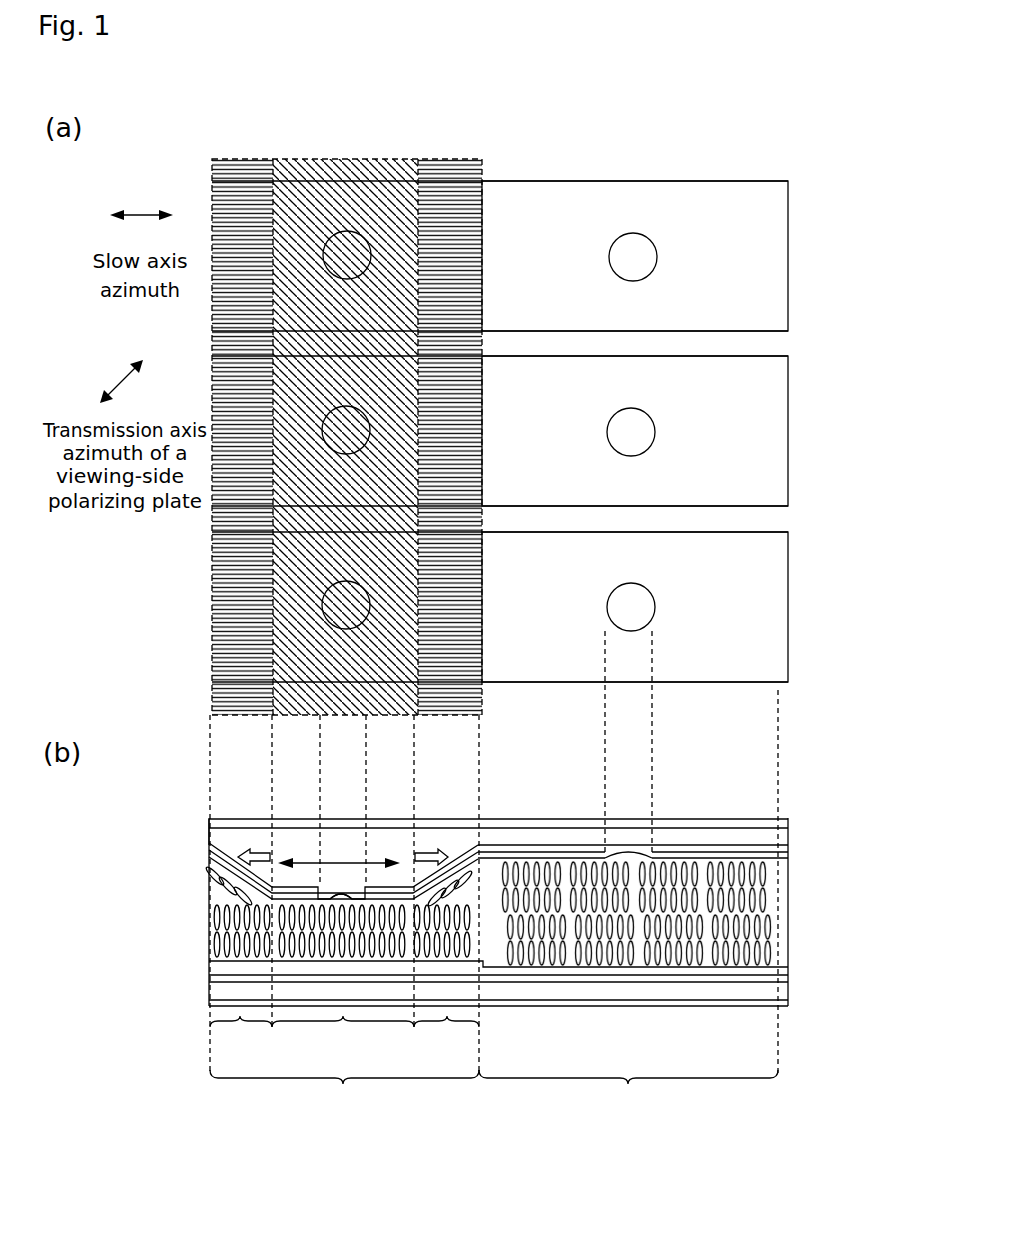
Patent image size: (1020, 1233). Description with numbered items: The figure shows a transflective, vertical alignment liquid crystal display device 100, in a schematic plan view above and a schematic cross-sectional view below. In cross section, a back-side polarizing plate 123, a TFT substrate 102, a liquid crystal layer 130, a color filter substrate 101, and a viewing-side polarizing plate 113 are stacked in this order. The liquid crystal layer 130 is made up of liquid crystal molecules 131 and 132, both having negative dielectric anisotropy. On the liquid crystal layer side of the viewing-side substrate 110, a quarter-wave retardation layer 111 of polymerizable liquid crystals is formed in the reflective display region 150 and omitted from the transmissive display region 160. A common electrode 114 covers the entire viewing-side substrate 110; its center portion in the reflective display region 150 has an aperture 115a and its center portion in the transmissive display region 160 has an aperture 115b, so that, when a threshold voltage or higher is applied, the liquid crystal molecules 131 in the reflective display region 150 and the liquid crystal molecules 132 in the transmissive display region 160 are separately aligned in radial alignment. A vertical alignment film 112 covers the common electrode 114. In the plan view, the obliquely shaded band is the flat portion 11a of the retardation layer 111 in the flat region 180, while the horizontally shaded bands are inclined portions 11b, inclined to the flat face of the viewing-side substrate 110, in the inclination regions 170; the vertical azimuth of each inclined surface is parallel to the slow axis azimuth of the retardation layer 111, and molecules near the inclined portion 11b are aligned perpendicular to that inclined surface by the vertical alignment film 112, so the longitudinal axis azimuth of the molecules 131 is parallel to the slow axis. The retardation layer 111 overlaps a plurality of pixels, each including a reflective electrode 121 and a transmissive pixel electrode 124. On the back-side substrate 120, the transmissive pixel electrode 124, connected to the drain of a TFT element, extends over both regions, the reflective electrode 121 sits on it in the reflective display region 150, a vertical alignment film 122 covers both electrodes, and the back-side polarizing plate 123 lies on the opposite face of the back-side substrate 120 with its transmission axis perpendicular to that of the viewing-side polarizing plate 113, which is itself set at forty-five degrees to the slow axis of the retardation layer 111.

The liquid crystal display device 100 is at (757, 165).
The color filter substrate 101 is at (93, 777).
The TFT substrate 102 is at (105, 945).
The viewing-side substrate 110 is at (263, 847).
The λ/4 retardation layer 111 is at (440, 113).
The flat portion 11a is at (343, 170).
The inclined portion 11b is at (258, 170).
The vertical alignment film 112 is at (210, 860).
The viewing-side polarizing plate 113 is at (240, 820).
The common electrode 114 is at (211, 849).
The aperture 115a is at (351, 247).
The aperture 115b is at (643, 253).
The back-side substrate 120 is at (210, 990).
The reflective electrode 121 is at (268, 205).
The vertical alignment film 122 is at (210, 962).
The back-side polarizing plate 123 is at (210, 1004).
The transmissive pixel electrode 124 is at (620, 198).
The liquid crystal layer 130 is at (215, 898).
The liquid crystal molecules 131 is at (215, 942).
The liquid crystal molecules 132 is at (213, 882).
The reflective display region 150 is at (344, 1094).
The transmissive display region 160 is at (628, 1094).
The inclination region 170 is at (344, 1041).
The flat region 180 is at (343, 1041).